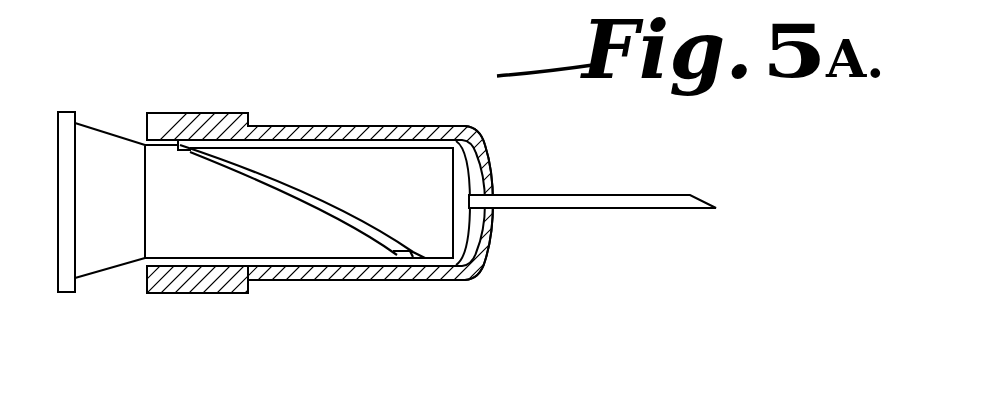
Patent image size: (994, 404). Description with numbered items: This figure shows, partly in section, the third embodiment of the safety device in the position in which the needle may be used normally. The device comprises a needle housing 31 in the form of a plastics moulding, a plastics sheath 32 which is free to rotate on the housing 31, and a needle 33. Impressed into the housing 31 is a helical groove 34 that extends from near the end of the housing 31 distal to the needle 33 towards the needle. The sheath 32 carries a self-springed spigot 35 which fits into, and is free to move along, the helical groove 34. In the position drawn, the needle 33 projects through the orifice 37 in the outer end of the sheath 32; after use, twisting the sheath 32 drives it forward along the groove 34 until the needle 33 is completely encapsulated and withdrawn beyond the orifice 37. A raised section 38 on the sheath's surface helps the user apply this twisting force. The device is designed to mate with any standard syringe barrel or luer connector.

The needle housing 31 is at (365, 173).
The plastics sheath 32 is at (417, 272).
The needle 33 is at (597, 197).
The helical groove 34 is at (278, 195).
The self-springed spigot 35 is at (185, 140).
The orifice 37 is at (487, 190).
The raised section 38 is at (213, 293).